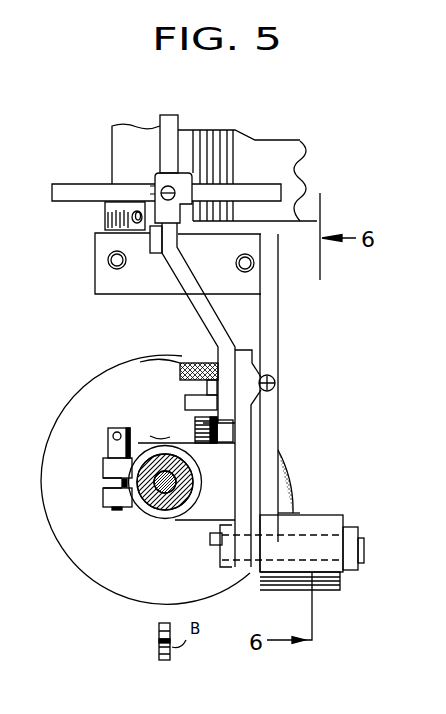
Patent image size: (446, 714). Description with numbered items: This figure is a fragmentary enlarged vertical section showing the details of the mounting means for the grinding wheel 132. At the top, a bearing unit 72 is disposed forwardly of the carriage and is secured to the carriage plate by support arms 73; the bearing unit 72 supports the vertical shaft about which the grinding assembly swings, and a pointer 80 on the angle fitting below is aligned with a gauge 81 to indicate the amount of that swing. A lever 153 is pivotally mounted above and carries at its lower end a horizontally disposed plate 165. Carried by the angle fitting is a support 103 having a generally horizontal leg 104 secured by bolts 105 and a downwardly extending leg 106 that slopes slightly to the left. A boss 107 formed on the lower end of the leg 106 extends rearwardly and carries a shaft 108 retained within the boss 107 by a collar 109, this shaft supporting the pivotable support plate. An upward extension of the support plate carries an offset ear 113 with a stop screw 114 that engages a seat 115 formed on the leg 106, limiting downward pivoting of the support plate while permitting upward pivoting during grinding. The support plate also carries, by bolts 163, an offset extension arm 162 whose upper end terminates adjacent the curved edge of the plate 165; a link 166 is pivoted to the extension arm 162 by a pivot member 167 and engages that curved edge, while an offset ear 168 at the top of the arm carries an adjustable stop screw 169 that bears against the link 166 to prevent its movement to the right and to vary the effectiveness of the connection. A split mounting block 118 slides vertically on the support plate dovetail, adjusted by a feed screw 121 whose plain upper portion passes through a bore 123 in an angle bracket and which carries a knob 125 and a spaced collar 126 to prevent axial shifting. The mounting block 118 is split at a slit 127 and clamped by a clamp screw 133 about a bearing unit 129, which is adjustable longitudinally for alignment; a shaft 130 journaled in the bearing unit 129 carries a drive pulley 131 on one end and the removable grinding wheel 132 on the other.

The bearing unit 72 is at (138, 128).
The lever 153 is at (178, 127).
The link 166 is at (182, 166).
The support arms 73 is at (263, 160).
The plate 165 is at (128, 184).
The offset ear 168 is at (156, 178).
The adjustable stop screw 169 is at (176, 193).
The pointer 80 is at (105, 222).
The gauge 81 is at (107, 211).
The horizontal leg 104 is at (118, 295).
The pivot member 167 is at (153, 248).
The bolts 105 is at (106, 262).
The extension arm 162 is at (203, 313).
The support 103 is at (281, 347).
The seat 115 is at (275, 368).
The stop screw 114 is at (276, 382).
The offset ear 113 is at (268, 402).
The downwardly extending leg 106 is at (268, 420).
The grinding wheel 132 is at (101, 589).
The knob 125 is at (173, 374).
The bolts 163 is at (205, 363).
The bore 123 is at (186, 402).
The bearing unit 129 is at (156, 436).
The collar 126 is at (193, 444).
The clamp screw 133 is at (108, 448).
The slit 127 is at (103, 483).
The mounting block 118 is at (188, 519).
The drive pulley 131 is at (145, 498).
The shaft 130 is at (166, 494).
The feed screw 121 is at (214, 533).
The boss 107 is at (314, 520).
The collar 109 is at (357, 531).
The shaft 108 is at (362, 550).